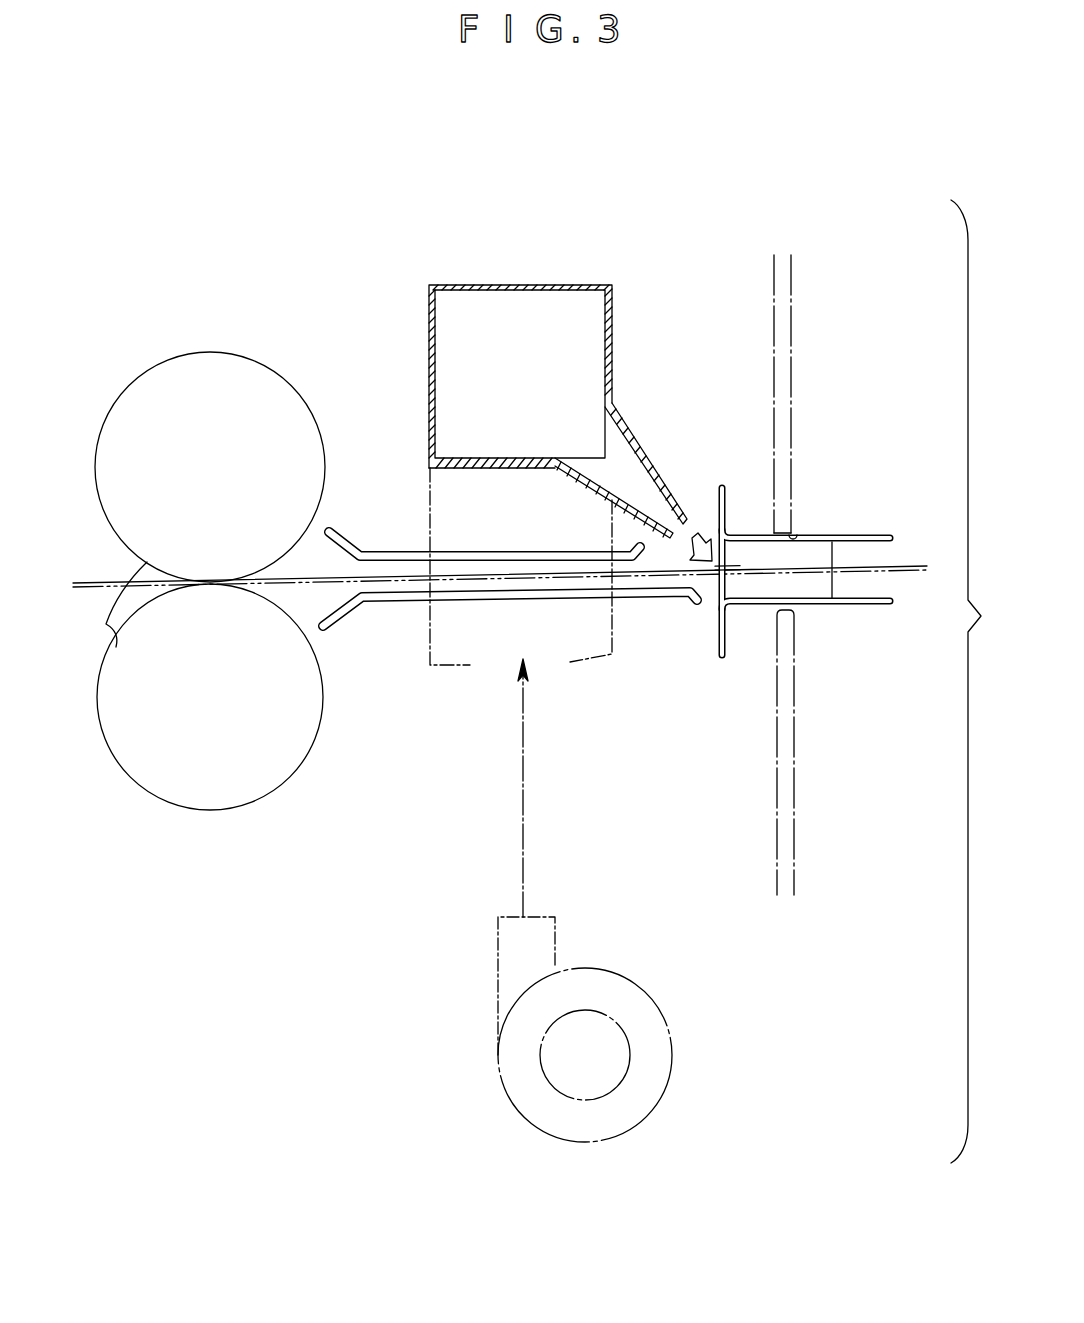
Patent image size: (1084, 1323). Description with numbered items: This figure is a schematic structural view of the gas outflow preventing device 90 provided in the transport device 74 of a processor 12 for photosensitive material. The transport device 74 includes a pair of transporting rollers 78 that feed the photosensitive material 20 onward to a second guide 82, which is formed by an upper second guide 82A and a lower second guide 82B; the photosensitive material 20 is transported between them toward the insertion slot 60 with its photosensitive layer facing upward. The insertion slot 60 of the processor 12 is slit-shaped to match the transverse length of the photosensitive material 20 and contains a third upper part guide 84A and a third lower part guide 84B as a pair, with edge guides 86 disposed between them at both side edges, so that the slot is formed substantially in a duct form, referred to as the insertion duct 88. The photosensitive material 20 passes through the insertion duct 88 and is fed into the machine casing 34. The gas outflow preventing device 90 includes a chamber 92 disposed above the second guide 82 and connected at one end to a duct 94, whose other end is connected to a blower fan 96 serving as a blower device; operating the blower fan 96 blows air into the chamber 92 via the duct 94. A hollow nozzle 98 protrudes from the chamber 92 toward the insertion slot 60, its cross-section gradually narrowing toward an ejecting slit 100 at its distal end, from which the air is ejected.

The processor 12 is at (924, 392).
The photosensitive material 20 is at (483, 578).
The machine casing 34 is at (773, 308).
The insertion slot 60 is at (798, 532).
The transport device 74 is at (250, 878).
The pair of transporting rollers 78 is at (109, 604).
The second guide 82 is at (509, 545).
The upper second guide 82A is at (352, 543).
The lower second guide 82B is at (368, 601).
The third upper part guide 84A is at (852, 535).
The third lower part guide 84B is at (878, 606).
The edge guides 86 is at (820, 593).
The insertion duct 88 is at (835, 567).
The gas outflow preventing device 90 is at (584, 668).
The chamber 92 is at (524, 283).
The duct 94 is at (618, 646).
The blower fan 96 is at (617, 980).
The nozzle 98 is at (652, 470).
The ejecting slit 100 is at (690, 528).